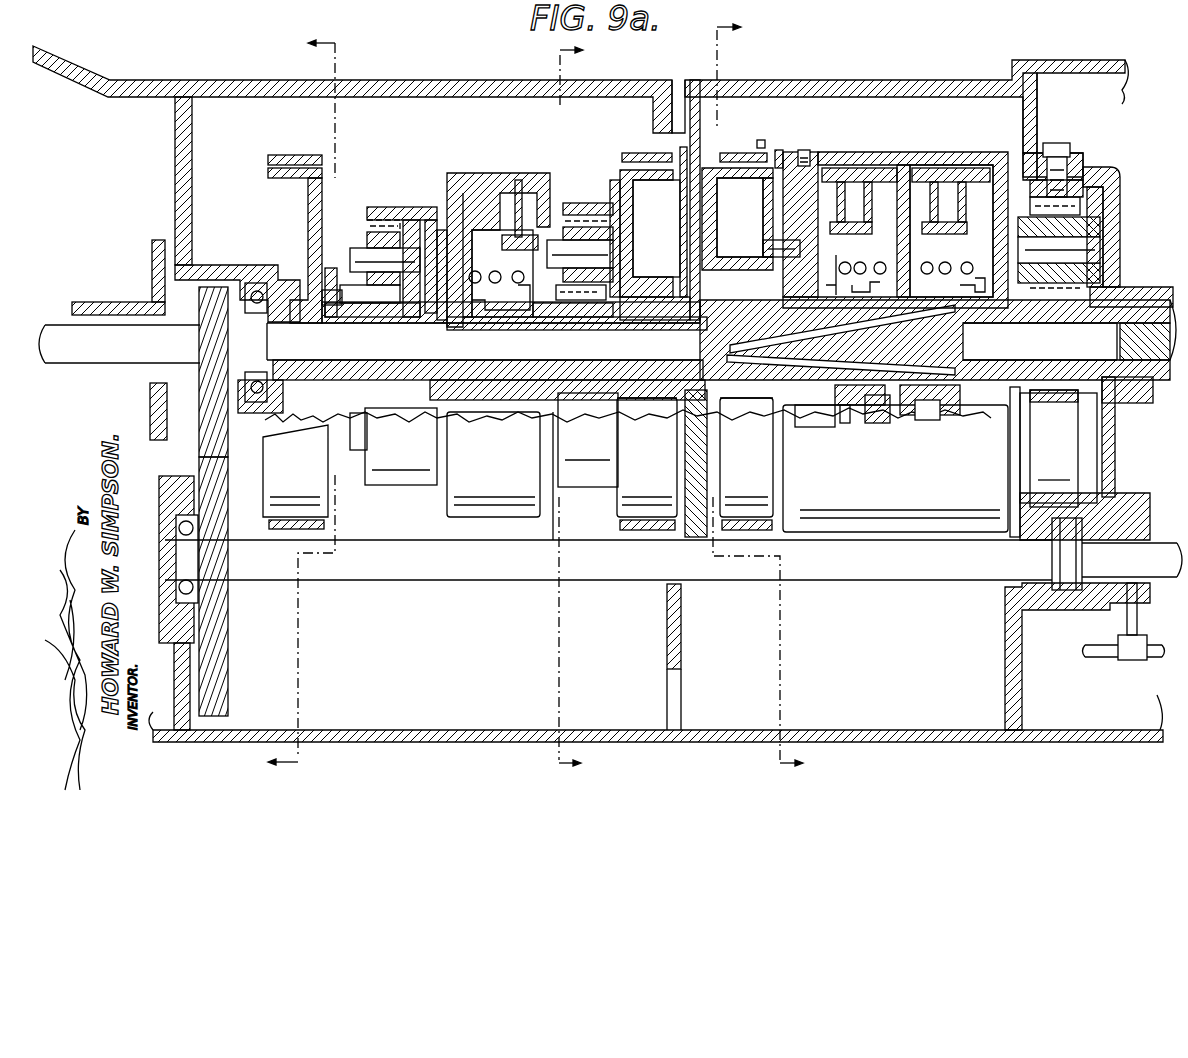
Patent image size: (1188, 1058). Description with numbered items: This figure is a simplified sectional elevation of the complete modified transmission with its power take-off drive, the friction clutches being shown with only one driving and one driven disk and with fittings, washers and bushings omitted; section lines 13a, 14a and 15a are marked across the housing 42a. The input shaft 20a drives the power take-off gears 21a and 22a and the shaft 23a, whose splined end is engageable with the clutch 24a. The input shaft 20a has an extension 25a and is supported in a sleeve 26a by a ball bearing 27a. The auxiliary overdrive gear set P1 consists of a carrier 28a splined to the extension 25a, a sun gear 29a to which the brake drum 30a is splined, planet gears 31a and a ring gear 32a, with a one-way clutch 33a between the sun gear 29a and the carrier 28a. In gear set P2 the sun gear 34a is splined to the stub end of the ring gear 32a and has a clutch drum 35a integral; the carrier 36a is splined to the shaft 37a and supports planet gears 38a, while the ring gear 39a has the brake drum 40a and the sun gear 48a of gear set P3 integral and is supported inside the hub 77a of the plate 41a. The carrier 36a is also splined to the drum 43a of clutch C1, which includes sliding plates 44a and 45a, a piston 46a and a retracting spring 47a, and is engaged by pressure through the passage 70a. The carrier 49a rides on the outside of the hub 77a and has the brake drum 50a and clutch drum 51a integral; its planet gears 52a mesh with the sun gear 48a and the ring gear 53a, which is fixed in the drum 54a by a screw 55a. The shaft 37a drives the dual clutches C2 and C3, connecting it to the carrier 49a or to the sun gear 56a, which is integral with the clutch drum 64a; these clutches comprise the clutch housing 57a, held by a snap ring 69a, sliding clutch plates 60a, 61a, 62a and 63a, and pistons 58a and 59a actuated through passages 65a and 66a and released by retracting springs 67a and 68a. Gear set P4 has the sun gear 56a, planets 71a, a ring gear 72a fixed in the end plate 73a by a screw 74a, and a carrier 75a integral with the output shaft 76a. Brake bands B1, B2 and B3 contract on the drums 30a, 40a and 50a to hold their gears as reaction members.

The section line 14a is at (286, 403).
The section line 13a is at (572, 406).
The section line 15a is at (777, 395).
The housing 42a is at (610, 82).
The plate 41a is at (698, 105).
The brake band B1 is at (300, 155).
The auxiliary overdrive gear set P1 is at (385, 185).
The clutch C1 is at (463, 168).
The gear set P2 is at (562, 190).
The brake band B2 is at (630, 151).
The brake band B3 is at (733, 154).
The gear set P3 is at (806, 150).
The clutch C2 is at (870, 160).
The clutch C3 is at (972, 160).
The gear set P4 is at (1092, 168).
The input shaft 20a is at (119, 301).
The power take-off gear 21a is at (206, 330).
The power take-off gear 22a is at (230, 600).
The shaft 23a is at (673, 554).
The clutch 24a is at (1143, 595).
The extension 25a is at (486, 351).
The sleeve 26a is at (240, 252).
The ball bearing 27a is at (258, 283).
The carrier 28a is at (312, 253).
The sun gear 29a is at (378, 412).
The brake drum 30a is at (295, 477).
The planet gears 31a is at (360, 247).
The ring gear 32a is at (372, 206).
The one-way clutch 33a is at (322, 298).
The sun gear 34a is at (548, 405).
The clutch drum 35a is at (460, 190).
The carrier 36a is at (656, 228).
The shaft 37a is at (938, 340).
The planet gears 38a is at (655, 233).
The ring gear 39a is at (588, 210).
The brake drum 40a is at (647, 464).
The drum 43a is at (493, 464).
The sliding plate 44a is at (518, 183).
The sliding plate 45a is at (522, 235).
The piston 46a is at (437, 230).
The retracting spring 47a is at (499, 281).
The sun gear 48a is at (835, 430).
The carrier 49a is at (765, 215).
The brake drum 50a is at (746, 464).
The clutch drum 51a is at (877, 255).
The planet gears 52a is at (785, 228).
The ring gear 53a is at (764, 136).
The drum 54a is at (895, 468).
The screw 55a is at (794, 146).
The sun gear 56a is at (1045, 405).
The clutch housing 57a is at (838, 168).
The piston 58a is at (882, 419).
The piston 59a is at (935, 420).
The sliding clutch plate 60a is at (823, 135).
The sliding clutch plate 61a is at (870, 184).
The sliding clutch plate 62a is at (937, 169).
The sliding clutch plate 63a is at (946, 189).
The clutch drum 64a is at (940, 257).
The passage 65a is at (738, 398).
The passage 66a is at (958, 335).
The retracting spring 67a is at (871, 282).
The retracting spring 68a is at (977, 266).
The snap ring 69a is at (847, 423).
The passage 70a is at (652, 400).
The planets 71a is at (1059, 252).
The ring gear 72a is at (1083, 193).
The end plate 73a is at (1120, 173).
The screw 74a is at (1062, 143).
The carrier 75a is at (1103, 240).
The output shaft 76a is at (1162, 287).
The hub 77a is at (668, 265).